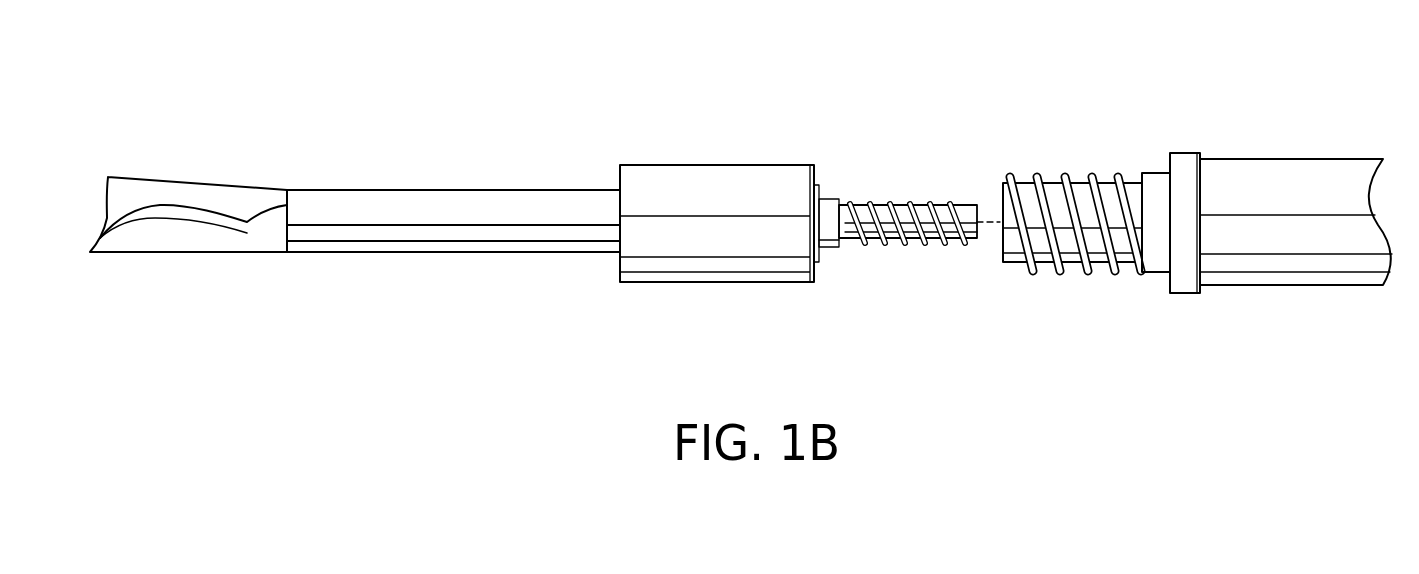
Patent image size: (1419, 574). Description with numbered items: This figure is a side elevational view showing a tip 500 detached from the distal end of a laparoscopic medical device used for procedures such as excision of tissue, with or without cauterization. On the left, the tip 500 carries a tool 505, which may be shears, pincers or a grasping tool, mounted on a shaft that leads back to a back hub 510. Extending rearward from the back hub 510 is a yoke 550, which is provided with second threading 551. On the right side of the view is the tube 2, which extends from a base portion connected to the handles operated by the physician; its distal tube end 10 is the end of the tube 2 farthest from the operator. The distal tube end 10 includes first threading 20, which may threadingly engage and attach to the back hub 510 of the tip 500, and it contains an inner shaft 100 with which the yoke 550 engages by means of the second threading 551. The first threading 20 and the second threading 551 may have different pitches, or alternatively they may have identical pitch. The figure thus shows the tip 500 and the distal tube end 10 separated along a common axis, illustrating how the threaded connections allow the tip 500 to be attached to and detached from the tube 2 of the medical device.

The tube 2 is at (1370, 127).
The distal tube end 10 is at (1074, 194).
The first threading 20 is at (1070, 183).
The inner shaft 100 is at (1002, 245).
The tip 500 is at (812, 106).
The tool 505 is at (257, 188).
The back hub 510 is at (662, 163).
The yoke 550 is at (917, 178).
The second threading 551 is at (880, 204).